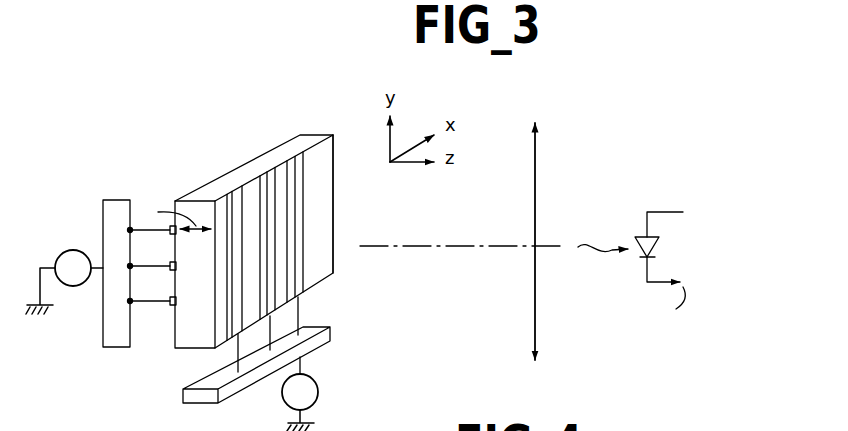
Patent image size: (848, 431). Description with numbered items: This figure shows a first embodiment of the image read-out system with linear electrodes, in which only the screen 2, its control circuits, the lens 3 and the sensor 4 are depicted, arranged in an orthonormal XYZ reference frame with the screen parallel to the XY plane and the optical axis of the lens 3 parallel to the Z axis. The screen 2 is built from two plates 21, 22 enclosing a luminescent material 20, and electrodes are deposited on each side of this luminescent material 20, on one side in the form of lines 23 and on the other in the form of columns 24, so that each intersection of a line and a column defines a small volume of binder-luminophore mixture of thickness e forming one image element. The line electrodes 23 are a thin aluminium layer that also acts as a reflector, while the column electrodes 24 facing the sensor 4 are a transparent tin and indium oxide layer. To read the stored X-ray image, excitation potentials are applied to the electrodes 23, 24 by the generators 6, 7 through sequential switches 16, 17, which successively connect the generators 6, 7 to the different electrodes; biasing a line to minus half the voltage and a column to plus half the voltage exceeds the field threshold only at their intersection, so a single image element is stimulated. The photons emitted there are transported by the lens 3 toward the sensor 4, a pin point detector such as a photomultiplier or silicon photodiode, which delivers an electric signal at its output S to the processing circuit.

The screen 2 is at (340, 129).
The luminescent material 20 is at (250, 172).
The plate 21 is at (190, 194).
The plate 22 is at (320, 216).
The line electrodes 23 is at (172, 306).
The column electrodes 24 is at (307, 288).
The sequential switch 16 is at (103, 325).
The generator 6 is at (72, 250).
The generator 7 is at (314, 380).
The sequential switch 17 is at (207, 398).
The lens 3 is at (535, 305).
The sensor 4 is at (642, 235).